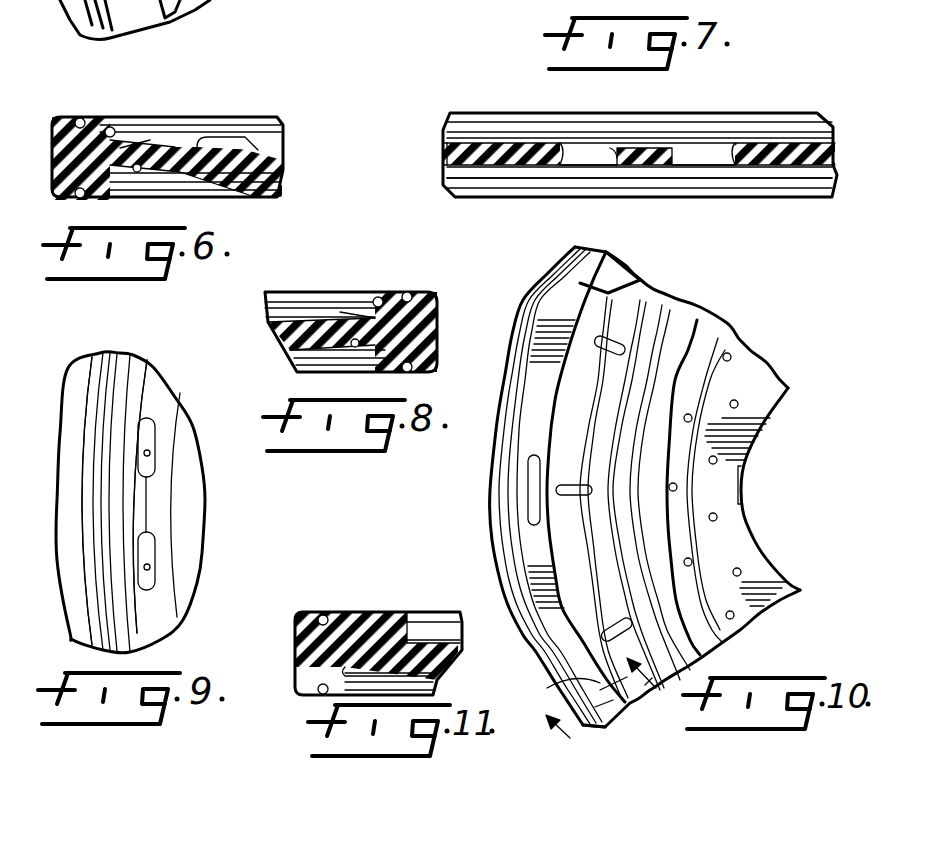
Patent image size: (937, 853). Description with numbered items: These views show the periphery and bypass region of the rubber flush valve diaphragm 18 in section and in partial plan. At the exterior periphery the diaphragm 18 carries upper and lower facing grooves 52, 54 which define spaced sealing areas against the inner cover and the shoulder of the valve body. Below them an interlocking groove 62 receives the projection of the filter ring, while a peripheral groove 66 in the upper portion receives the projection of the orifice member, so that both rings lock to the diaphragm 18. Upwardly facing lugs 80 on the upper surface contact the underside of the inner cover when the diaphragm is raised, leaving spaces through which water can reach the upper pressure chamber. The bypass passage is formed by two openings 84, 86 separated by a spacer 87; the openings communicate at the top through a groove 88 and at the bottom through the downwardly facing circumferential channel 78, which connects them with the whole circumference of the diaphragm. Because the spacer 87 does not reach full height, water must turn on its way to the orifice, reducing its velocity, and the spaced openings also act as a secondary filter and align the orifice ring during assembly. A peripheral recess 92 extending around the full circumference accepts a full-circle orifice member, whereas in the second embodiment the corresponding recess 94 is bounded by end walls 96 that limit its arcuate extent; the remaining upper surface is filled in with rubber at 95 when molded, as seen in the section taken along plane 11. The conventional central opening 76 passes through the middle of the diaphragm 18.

In FIG. 10, the section plane 11— 11 is at (617, 713).
In FIG. 6, the diaphragm 18 is at (265, 185).
In FIG. 7, the diaphragm 18 is at (445, 160).
In FIG. 8, the diaphragm 18 is at (290, 340).
In FIG. 9, the diaphragm 18 is at (183, 595).
In FIG. 6, the upper facing groove 52 is at (80, 117).
In FIG. 8, the upper facing groove 52 is at (412, 292).
In FIG. 11, the upper facing groove 52 is at (325, 615).
In FIG. 6, the lower facing groove 54 is at (78, 196).
In FIG. 8, the lower facing groove 54 is at (418, 372).
In FIG. 9, the lower facing groove 54 is at (100, 355).
In FIG. 11, the lower facing groove 54 is at (322, 694).
In FIG. 6, the interlocking groove 62 is at (56, 162).
In FIG. 7, the interlocking groove 62 is at (452, 180).
In FIG. 8, the interlocking groove 62 is at (380, 353).
In FIG. 11, the interlocking groove 62 is at (436, 683).
In FIG. 6, the peripheral groove 66 is at (110, 128).
In FIG. 7, the peripheral groove 66 is at (447, 135).
In FIG. 8, the peripheral groove 66 is at (379, 297).
In FIG. 10, the central opening 76 is at (760, 550).
In FIG. 6, the circumferential channel 78 is at (140, 172).
In FIG. 7, the circumferential channel 78 is at (760, 166).
In FIG. 8, the circumferential channel 78 is at (352, 347).
In FIG. 9, the circumferential channel 78 is at (150, 365).
In FIG. 6, the upwardly facing lugs 80 is at (218, 135).
In FIG. 7, the first bypass opening 84 is at (592, 150).
In FIG. 9, the first bypass opening 84 is at (152, 455).
In FIG. 7, the second bypass opening 86 is at (703, 148).
In FIG. 9, the second bypass opening 86 is at (152, 567).
In FIG. 6, the spacer 87 is at (140, 150).
In FIG. 7, the spacer 87 is at (658, 150).
In FIG. 9, the spacer 87 is at (150, 495).
In FIG. 6, the groove 88 is at (142, 146).
In FIG. 7, the groove 88 is at (625, 145).
In FIG. 10, the groove 88 is at (530, 488).
In FIG. 7, the peripheral recess 92 is at (530, 143).
In FIG. 8, the peripheral recess 92 is at (340, 312).
In FIG. 10, the recess 94 is at (530, 430).
In FIG. 11, the filled-in rubber 95 is at (370, 617).
In FIG. 10, the filled-in rubber 95 is at (620, 265).
In FIG. 10, the end walls 96 is at (606, 292).